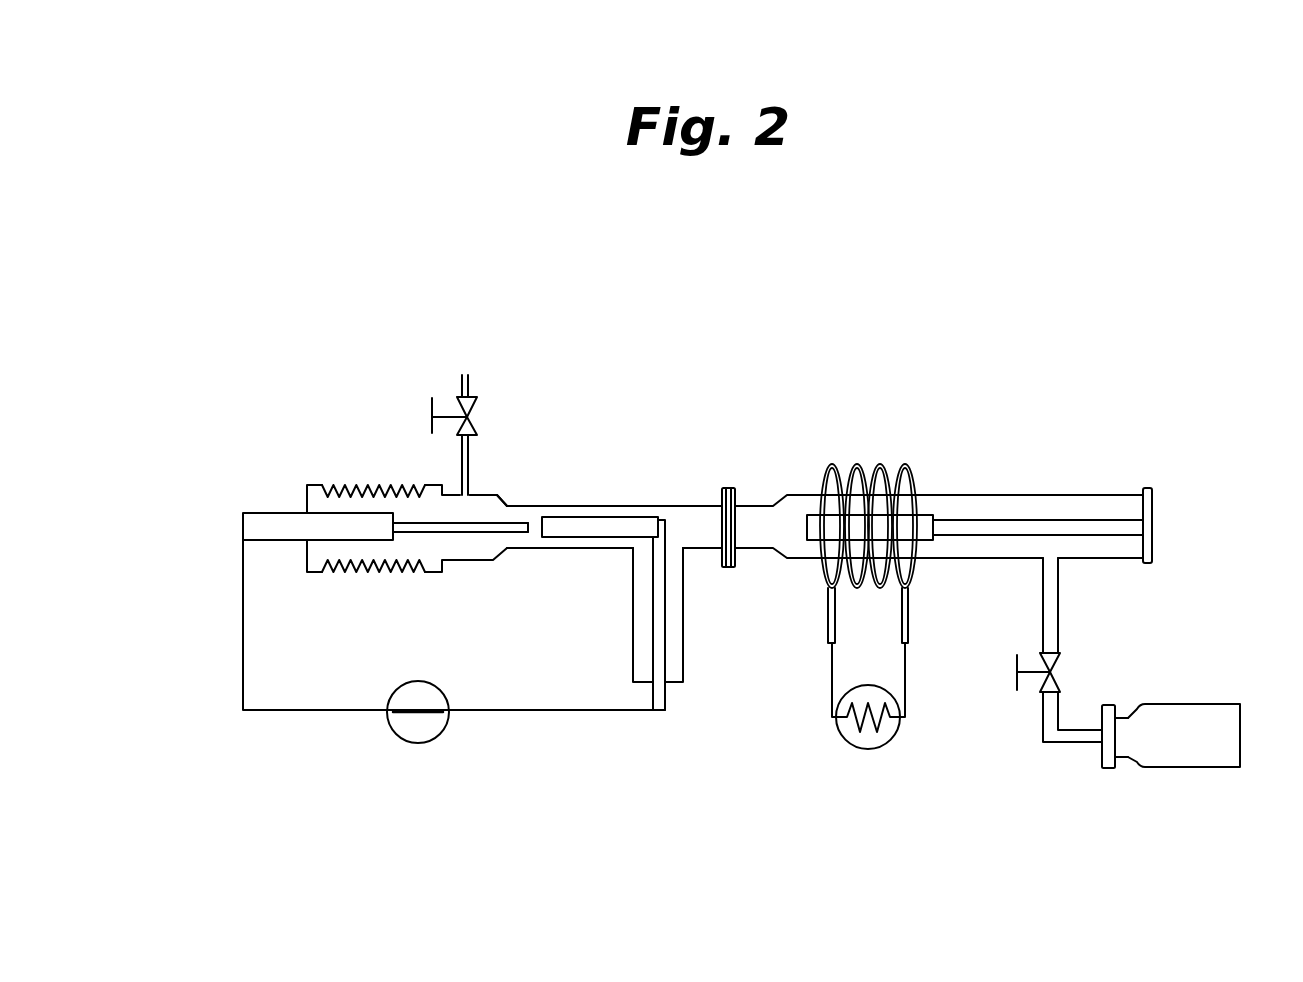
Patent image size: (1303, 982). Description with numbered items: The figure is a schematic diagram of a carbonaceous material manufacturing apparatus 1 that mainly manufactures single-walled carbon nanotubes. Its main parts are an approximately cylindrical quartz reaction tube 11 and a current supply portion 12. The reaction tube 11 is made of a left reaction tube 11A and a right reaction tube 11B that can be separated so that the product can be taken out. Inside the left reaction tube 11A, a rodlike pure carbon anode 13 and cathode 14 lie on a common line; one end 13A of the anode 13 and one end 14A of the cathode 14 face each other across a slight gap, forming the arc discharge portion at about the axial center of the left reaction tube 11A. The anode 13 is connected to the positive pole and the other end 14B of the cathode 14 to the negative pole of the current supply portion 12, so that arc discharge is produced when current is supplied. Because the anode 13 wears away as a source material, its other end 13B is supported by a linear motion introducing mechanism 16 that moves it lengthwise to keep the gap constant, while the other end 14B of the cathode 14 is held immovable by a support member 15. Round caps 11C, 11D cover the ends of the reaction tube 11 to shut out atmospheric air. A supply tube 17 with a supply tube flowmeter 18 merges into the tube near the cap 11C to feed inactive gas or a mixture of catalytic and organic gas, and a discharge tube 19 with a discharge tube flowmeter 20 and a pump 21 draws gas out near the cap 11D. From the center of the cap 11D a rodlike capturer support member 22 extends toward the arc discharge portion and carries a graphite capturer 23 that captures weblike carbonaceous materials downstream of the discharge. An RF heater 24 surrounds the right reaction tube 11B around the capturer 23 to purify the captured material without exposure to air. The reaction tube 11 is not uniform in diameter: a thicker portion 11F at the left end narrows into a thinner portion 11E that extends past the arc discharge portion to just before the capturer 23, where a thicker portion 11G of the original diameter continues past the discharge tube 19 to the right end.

The carbonaceous material manufacturing apparatus 1 is at (845, 317).
The reaction tube 11 is at (731, 468).
The left reaction tube 11A is at (522, 507).
The right reaction tube 11B is at (1030, 495).
The cap 11C is at (317, 485).
The cap 11D is at (1152, 542).
The thinner portion 11E is at (643, 510).
The thicker portion 11F is at (480, 493).
The thicker portion 11G is at (983, 492).
The current supply portion 12 is at (418, 743).
The anode 13 is at (427, 521).
The end of the anode 13A is at (528, 537).
The threaded portion 13B is at (370, 527).
The cathode 14 is at (618, 512).
The end of the cathode 14A is at (542, 517).
The other end of the cathode 14B is at (665, 527).
The support member 15 is at (658, 553).
The linear motion introducing mechanism 16 is at (267, 523).
The supply tube 17 is at (457, 455).
The supply tube flowmeter 18 is at (457, 403).
The discharge tube 19 is at (1058, 612).
The discharge tube flowmeter 20 is at (1040, 686).
The pump 21 is at (1200, 768).
The capturer support member 22 is at (1098, 522).
The capturer 23 is at (918, 525).
The RF heater 24 is at (880, 462).